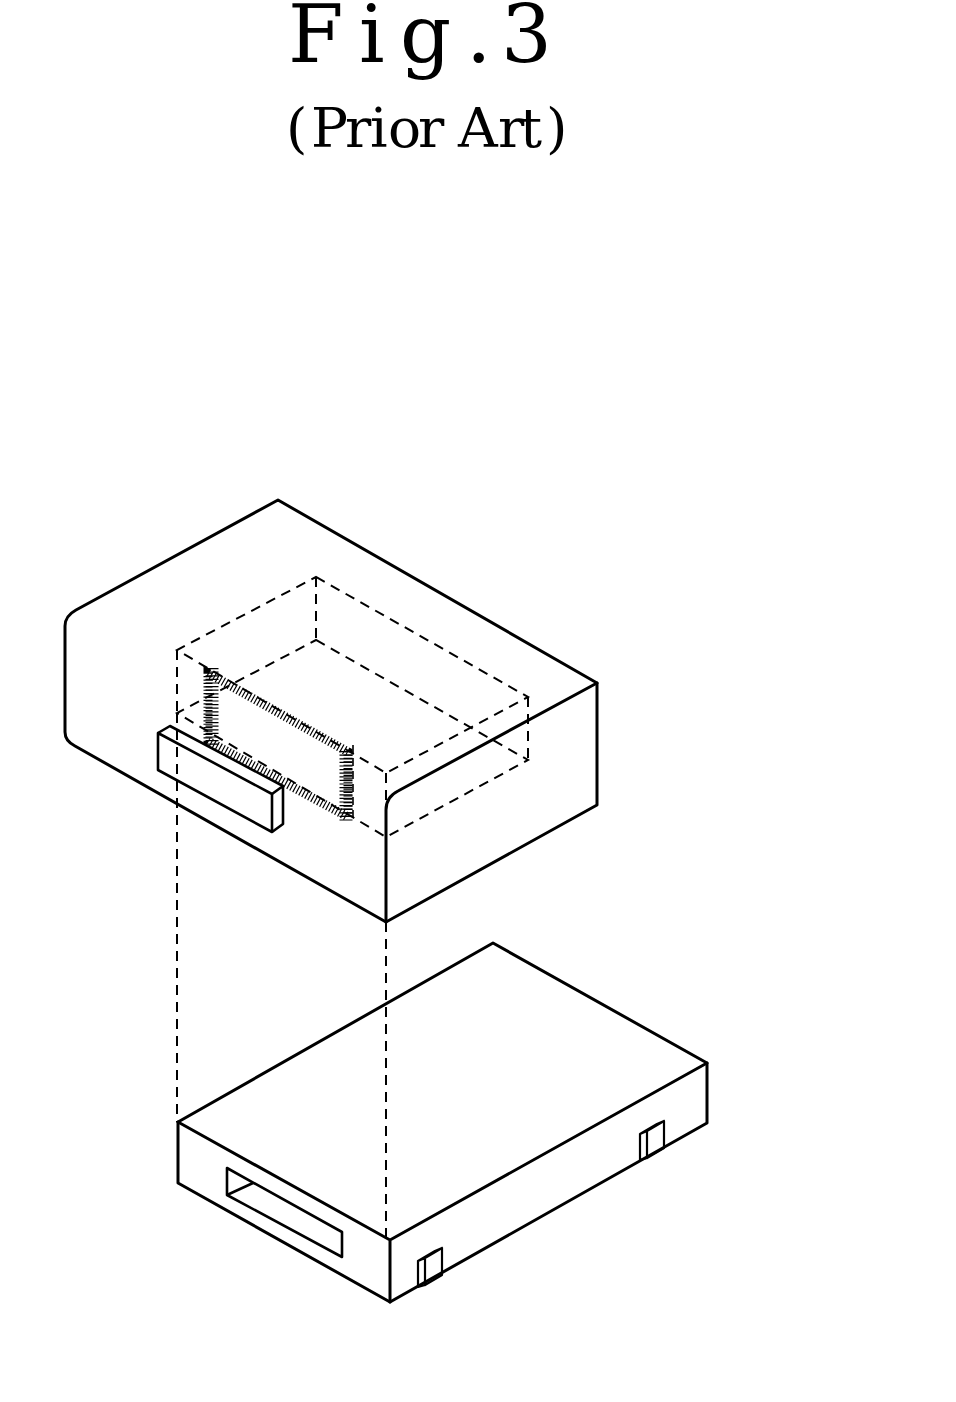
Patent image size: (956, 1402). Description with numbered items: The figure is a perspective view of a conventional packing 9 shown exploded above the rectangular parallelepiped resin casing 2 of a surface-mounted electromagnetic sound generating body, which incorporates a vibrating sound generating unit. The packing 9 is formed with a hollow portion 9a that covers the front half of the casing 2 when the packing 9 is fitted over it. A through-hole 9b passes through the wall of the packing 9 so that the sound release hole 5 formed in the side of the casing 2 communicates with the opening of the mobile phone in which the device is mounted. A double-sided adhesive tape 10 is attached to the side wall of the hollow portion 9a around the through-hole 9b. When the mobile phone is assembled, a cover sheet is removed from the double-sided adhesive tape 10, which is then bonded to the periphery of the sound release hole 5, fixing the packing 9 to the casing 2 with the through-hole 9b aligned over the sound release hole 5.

The packing 9 is at (225, 543).
The hollow portion 9a is at (458, 682).
The through-hole 9b is at (218, 783).
The double-sided adhesive tape 10 is at (346, 816).
The casing 2 is at (623, 1047).
The sound release hole 5 is at (293, 1222).